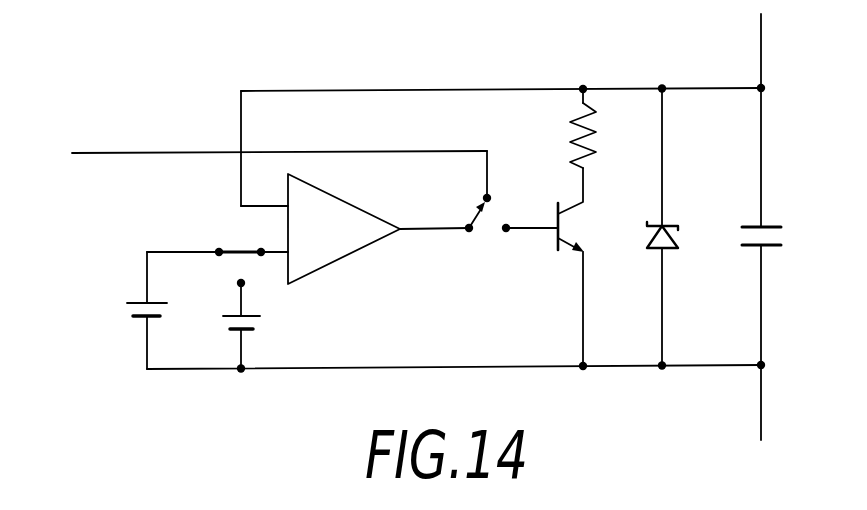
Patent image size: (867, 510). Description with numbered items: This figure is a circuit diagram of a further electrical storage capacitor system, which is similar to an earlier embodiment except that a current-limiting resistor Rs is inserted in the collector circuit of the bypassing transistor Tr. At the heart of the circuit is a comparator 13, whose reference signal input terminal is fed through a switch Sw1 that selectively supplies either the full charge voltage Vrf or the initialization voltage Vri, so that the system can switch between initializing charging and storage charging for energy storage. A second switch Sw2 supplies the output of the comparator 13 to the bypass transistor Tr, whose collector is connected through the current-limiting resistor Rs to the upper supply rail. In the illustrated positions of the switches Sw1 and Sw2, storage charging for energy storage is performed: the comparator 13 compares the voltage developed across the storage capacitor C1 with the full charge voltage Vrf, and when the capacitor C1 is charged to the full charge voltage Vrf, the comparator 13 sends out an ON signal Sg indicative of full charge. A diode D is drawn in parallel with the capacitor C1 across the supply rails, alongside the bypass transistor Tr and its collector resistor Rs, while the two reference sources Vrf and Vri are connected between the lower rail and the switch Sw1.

The ON signal Sg is at (264, 167).
The comparator 13 is at (349, 200).
The switch Sw1 is at (217, 233).
The switch Sw2 is at (479, 241).
The full charge voltage Vrf is at (130, 311).
The initialization voltage Vri is at (260, 319).
The bypass transistor Tr is at (583, 267).
The current-limiting resistor Rs is at (598, 136).
The zener diode D is at (664, 224).
The capacitor C1 is at (767, 226).